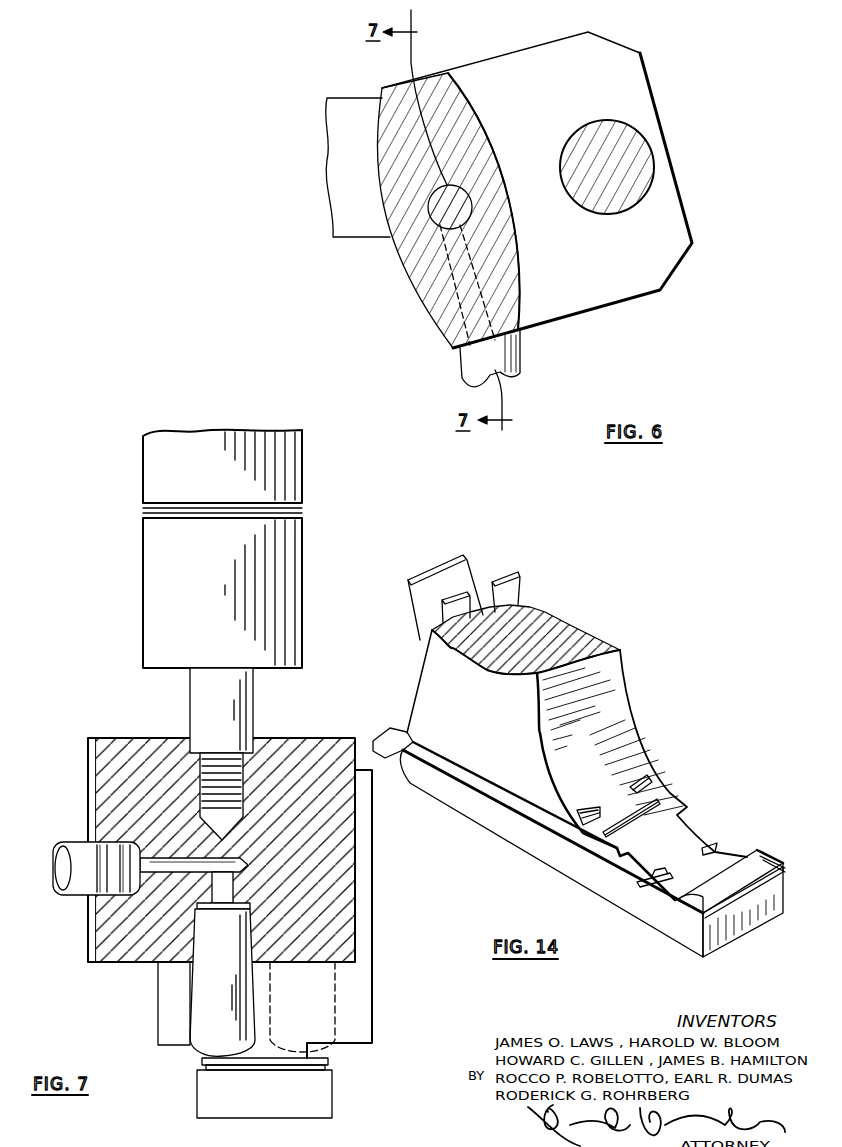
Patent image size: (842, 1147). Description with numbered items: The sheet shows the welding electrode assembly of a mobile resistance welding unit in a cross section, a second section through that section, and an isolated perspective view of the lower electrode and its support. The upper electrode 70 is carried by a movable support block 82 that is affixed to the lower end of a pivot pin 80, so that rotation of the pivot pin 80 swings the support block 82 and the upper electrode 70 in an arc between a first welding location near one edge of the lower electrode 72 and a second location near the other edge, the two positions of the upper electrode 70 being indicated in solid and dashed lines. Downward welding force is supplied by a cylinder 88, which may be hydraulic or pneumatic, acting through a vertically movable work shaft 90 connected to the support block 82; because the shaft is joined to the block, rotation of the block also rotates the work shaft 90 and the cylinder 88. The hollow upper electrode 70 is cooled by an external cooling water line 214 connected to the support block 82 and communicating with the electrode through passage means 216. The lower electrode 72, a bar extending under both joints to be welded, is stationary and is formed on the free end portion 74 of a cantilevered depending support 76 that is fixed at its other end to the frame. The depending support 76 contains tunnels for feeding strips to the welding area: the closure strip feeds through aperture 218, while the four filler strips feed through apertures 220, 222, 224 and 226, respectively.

In FIG. 7, the upper electrode 70 is at (207, 997).
In FIG. 7, the lower electrode 72 is at (322, 1067).
In FIG. 14, the lower electrode 72 is at (753, 860).
In FIG. 6, the end portion 74 is at (348, 228).
In FIG. 7, the end portion 74 is at (213, 1090).
In FIG. 14, the end portion 74 is at (678, 927).
In FIG. 14, the depending support 76 is at (577, 706).
In FIG. 6, the pivot pin 80 is at (628, 172).
In FIG. 6, the movable support block 82 is at (593, 297).
In FIG. 7, the movable support block 82 is at (338, 889).
In FIG. 7, the cylinder 88 is at (155, 590).
In FIG. 7, the work shaft 90 is at (203, 697).
In FIG. 6, the external cooling water line 214 is at (477, 367).
In FIG. 7, the external cooling water line 214 is at (80, 845).
In FIG. 7, the passage means 216 is at (242, 865).
In FIG. 14, the aperture 218 is at (643, 805).
In FIG. 14, the aperture 220 is at (643, 777).
In FIG. 14, the aperture 222 is at (580, 810).
In FIG. 14, the aperture 224 is at (713, 843).
In FIG. 14, the aperture 226 is at (660, 873).